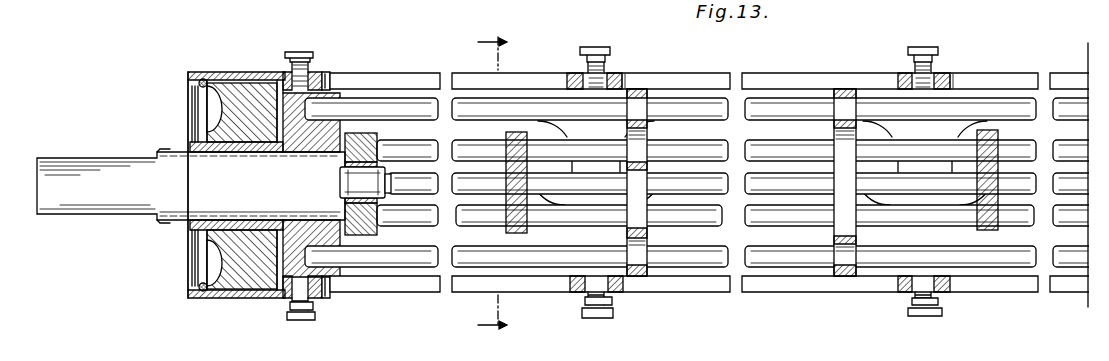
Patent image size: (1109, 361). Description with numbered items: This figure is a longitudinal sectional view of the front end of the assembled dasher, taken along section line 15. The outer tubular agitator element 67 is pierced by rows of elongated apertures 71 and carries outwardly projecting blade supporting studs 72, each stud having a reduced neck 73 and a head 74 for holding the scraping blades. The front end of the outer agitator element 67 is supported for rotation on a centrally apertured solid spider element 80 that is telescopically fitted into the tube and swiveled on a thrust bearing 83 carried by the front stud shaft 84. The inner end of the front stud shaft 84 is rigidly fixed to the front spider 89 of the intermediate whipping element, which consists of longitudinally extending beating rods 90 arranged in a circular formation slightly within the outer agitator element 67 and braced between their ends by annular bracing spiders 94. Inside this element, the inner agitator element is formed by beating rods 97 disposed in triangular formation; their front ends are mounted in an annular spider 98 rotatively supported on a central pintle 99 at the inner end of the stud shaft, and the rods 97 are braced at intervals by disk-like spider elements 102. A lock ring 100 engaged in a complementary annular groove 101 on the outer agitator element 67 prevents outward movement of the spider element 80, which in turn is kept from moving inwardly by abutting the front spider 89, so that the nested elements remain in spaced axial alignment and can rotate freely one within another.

The section line 15- 15 is at (490, 178).
The outer tubular agitator element 67 is at (244, 71).
The elongated apertures 71 is at (1008, 122).
The blade supporting studs 72 is at (317, 64).
The reduced neck 73 is at (313, 309).
The head 74 is at (301, 321).
The spider element 80 is at (245, 267).
The thrust bearing 83 is at (181, 221).
The front stud shaft 84 is at (166, 151).
The front spider 89 is at (312, 122).
The beating rods 90 is at (376, 101).
The annular bracing spiders 94 is at (648, 273).
The beating rods 97 is at (612, 157).
The annular spider 98 is at (366, 236).
The central pintle 99 is at (350, 183).
The lock ring 100 is at (200, 108).
The annular groove 101 is at (203, 78).
The disk-like spider elements 102 is at (512, 200).